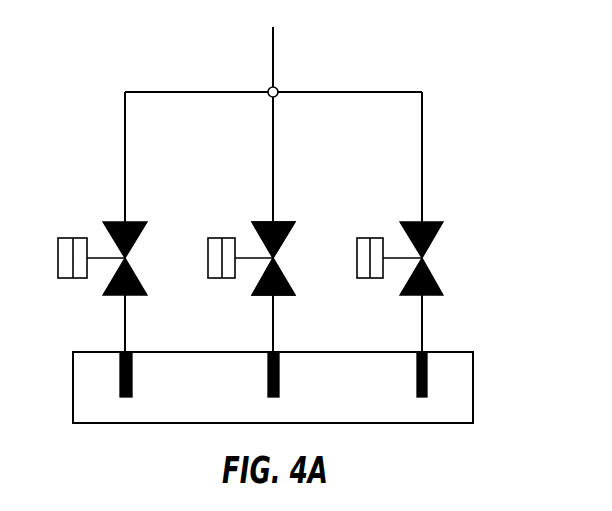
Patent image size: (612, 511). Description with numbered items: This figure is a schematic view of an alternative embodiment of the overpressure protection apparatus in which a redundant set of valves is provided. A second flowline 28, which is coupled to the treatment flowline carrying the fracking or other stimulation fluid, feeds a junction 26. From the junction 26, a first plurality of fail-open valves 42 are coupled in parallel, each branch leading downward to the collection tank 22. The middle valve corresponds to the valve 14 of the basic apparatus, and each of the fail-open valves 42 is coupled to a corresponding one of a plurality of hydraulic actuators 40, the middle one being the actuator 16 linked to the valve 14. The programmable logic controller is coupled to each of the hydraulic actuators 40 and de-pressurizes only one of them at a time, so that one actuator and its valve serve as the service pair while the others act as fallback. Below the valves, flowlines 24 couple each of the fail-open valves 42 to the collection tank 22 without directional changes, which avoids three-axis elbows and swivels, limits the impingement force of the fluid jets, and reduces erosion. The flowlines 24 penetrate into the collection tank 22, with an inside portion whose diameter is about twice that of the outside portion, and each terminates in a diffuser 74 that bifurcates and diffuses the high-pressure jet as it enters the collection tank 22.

The valve 14 is at (282, 222).
The actuator 16 is at (222, 279).
The collection tank 22 is at (473, 388).
The flowlines 24 is at (125, 313).
The junction 26 is at (278, 88).
The second flowline 28 is at (273, 44).
The hydraulic actuators 40 is at (72, 279).
The fail-open valves 42 is at (133, 222).
The diffuser 74 is at (130, 397).